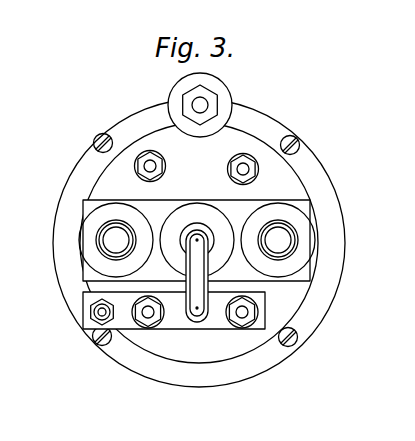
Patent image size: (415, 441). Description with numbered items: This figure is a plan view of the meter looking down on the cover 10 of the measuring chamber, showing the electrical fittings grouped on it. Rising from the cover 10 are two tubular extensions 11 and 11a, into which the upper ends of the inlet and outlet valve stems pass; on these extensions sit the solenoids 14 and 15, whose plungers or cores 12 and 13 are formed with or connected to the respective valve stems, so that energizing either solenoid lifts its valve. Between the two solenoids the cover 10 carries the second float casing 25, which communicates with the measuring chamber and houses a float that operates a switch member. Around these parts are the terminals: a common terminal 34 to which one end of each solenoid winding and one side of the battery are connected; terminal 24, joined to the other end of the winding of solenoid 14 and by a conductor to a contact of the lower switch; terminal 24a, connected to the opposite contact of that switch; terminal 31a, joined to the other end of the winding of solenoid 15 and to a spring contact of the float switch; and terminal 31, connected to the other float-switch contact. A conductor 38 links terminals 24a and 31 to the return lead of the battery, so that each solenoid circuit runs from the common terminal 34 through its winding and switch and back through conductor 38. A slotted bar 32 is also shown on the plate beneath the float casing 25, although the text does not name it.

The cover 10 is at (270, 129).
The common terminal 34 is at (203, 104).
The tubular extension 11 is at (93, 243).
The tubular extension 11a is at (291, 232).
The plunger or core 12 is at (116, 240).
The plunger or core 13 is at (278, 240).
The solenoid 14 is at (80, 233).
The solenoid 15 is at (312, 242).
The terminal 24 is at (135, 165).
The terminal 24a is at (243, 317).
The second float casing 25 is at (216, 202).
The terminal 31 is at (147, 317).
The terminal 31a is at (260, 172).
The lower bracket plate 32 is at (208, 330).
The conductor 38 is at (180, 328).